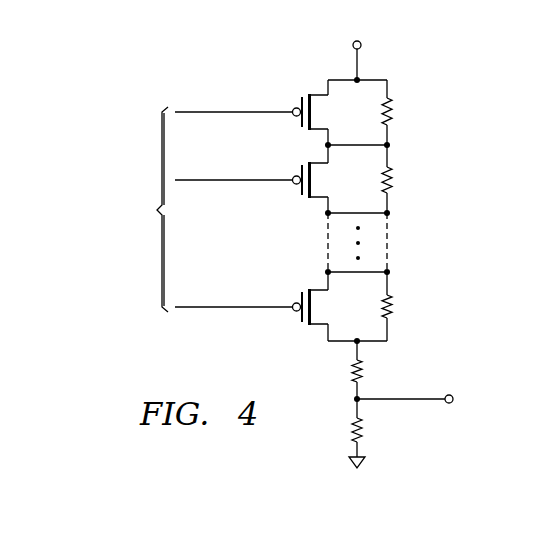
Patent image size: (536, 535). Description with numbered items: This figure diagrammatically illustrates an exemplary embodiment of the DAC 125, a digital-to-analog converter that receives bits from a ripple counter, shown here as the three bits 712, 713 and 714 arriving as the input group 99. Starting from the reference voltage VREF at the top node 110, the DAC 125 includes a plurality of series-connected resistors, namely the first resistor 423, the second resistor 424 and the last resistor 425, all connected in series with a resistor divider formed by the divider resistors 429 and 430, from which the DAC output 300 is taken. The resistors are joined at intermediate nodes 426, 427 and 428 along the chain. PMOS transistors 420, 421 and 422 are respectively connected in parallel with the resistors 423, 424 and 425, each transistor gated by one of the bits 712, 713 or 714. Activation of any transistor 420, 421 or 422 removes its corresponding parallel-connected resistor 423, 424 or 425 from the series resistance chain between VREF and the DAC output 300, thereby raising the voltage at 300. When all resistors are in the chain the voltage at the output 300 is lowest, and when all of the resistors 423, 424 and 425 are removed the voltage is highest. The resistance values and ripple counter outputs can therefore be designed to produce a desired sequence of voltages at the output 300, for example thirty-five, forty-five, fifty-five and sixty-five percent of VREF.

The input signal lines from decoder 99 is at (222, 89).
The DAC 125 is at (408, 61).
The reference voltage node VREF 110 is at (355, 63).
The DAC output 300 is at (415, 402).
The PMOS transistor 420 is at (299, 102).
The PMOS transistor 421 is at (299, 190).
The PMOS transistor 422 is at (299, 318).
The resistor R1 423 is at (393, 106).
The resistor R2 424 is at (393, 180).
The resistor RN 425 is at (393, 303).
The node 426 is at (390, 142).
The node 427 is at (390, 210).
The node 428 is at (390, 336).
The resistor RA 429 is at (350, 369).
The resistor RB 430 is at (350, 428).
The bit 712 is at (217, 114).
The bit 713 is at (217, 182).
The bit 714 is at (217, 309).